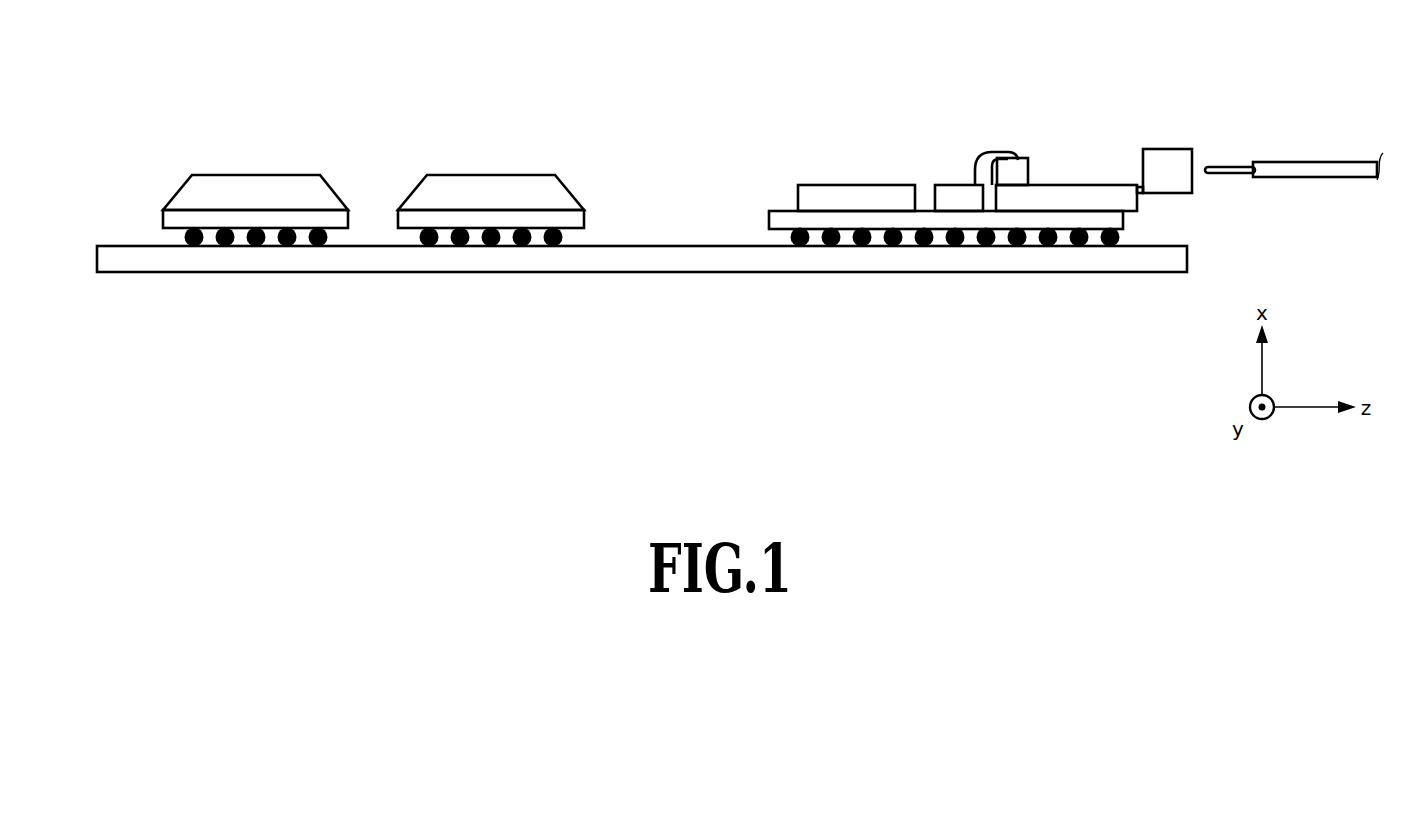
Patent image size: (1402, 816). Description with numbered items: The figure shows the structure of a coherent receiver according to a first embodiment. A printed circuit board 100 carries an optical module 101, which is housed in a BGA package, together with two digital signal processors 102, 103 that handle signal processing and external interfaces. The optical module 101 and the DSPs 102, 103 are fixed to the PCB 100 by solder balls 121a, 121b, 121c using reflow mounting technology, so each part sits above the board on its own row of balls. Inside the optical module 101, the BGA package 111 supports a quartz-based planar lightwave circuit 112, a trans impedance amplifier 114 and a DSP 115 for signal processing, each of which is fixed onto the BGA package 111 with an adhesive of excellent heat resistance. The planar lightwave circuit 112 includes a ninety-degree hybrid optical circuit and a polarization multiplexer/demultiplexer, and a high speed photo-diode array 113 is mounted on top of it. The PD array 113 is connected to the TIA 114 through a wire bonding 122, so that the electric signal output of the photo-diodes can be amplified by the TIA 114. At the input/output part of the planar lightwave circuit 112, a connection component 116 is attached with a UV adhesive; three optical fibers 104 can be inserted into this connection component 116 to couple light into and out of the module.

The printed circuit board 100 is at (112, 245).
The optical module 101 is at (957, 168).
The digital signal processor 102 is at (495, 185).
The digital signal processor 103 is at (259, 185).
The optical fiber 104 is at (1310, 162).
The BGA package 111 is at (768, 212).
The planar lightwave circuit 112 is at (1080, 184).
The photo-diode array 113 is at (1011, 157).
The trans impedance amplifier 114 is at (939, 184).
The DSP 115 is at (860, 184).
The connection component 116 is at (1167, 149).
The wire bonding 122 is at (987, 151).
The solder balls 121a is at (797, 247).
The solder balls 121b is at (547, 247).
The solder balls 121c is at (313, 247).